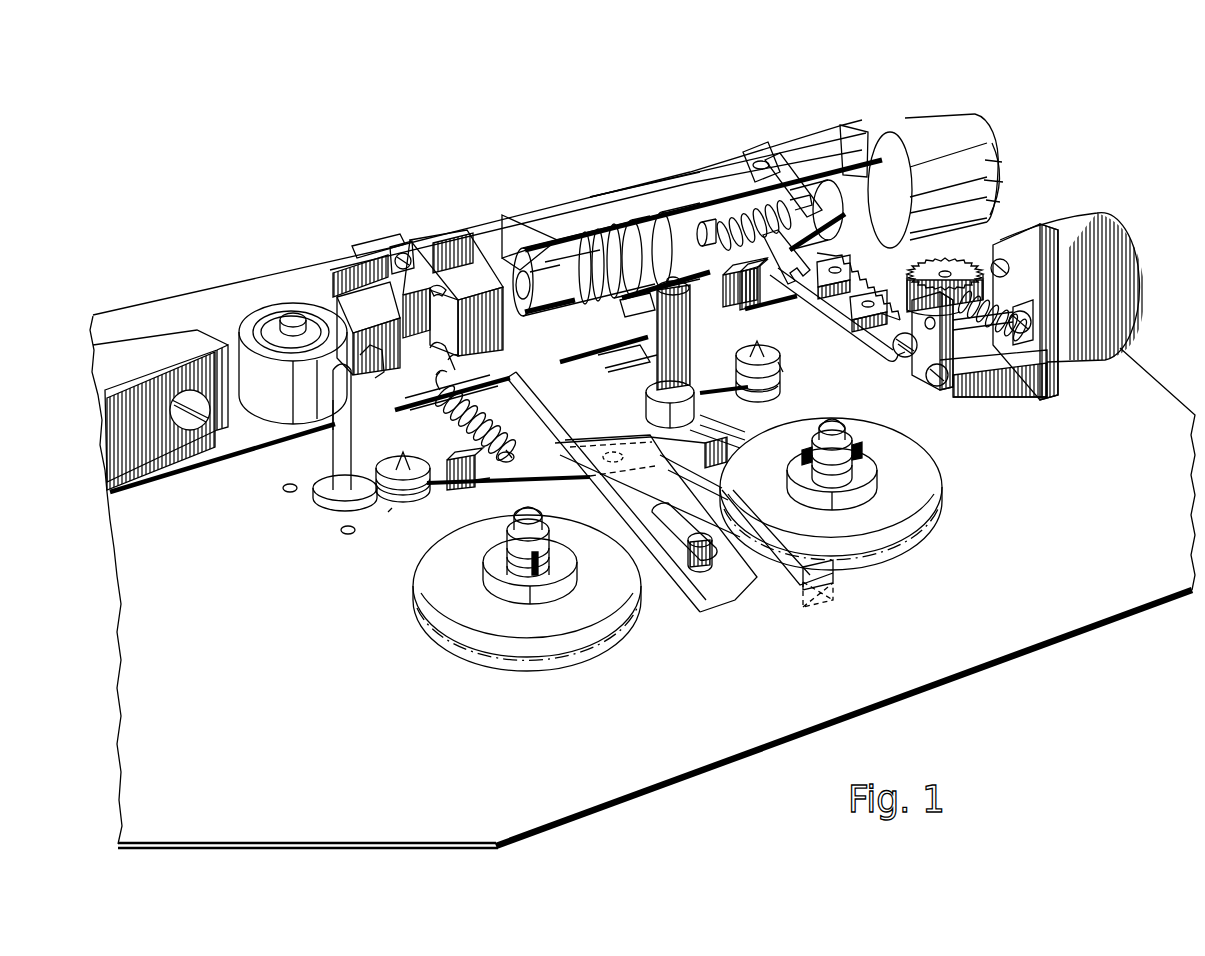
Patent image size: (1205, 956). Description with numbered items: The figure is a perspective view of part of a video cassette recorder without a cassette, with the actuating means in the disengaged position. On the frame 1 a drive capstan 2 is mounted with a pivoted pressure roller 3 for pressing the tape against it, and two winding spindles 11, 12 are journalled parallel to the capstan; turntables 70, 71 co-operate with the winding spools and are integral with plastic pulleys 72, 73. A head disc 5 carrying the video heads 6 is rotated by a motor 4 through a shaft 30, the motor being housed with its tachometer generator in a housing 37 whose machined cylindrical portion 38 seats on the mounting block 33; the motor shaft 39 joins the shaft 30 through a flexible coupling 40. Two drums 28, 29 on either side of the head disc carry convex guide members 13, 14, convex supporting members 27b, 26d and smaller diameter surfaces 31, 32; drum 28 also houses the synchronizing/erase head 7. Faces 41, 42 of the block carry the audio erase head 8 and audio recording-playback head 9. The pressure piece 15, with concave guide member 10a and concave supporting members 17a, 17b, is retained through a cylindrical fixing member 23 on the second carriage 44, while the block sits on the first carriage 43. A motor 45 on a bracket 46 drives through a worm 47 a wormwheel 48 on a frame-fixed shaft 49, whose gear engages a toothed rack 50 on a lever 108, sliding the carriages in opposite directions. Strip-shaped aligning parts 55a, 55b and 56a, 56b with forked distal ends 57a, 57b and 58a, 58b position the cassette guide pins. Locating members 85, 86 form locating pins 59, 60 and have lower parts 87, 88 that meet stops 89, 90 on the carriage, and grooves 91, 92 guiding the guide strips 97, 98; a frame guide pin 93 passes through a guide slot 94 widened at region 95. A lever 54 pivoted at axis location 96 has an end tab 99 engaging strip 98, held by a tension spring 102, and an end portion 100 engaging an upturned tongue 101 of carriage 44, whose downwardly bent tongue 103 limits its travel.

The frame 1 is at (953, 656).
The drive capstan 2 is at (333, 462).
The pressure roller 3 is at (272, 312).
The motor 4 is at (1003, 149).
The head disc 5 is at (592, 232).
The video recording and/or playback heads 6 is at (620, 298).
The synchronizing/erase head 7 is at (627, 232).
The audio erase head 8 is at (466, 282).
The audio recording-playback head 9 is at (340, 275).
The concavely curved guide member 10a is at (657, 380).
The winding spindle 11 is at (504, 547).
The winding spindle 12 is at (858, 470).
The convexly curved guide member 13 is at (678, 227).
The convexly curved guide member 14 is at (542, 262).
The pressure piece 15 is at (652, 387).
The concave supporting member 17a is at (642, 352).
The concave supporting member 17b is at (652, 300).
The cylindrical fixing member 23 is at (686, 412).
The convex supporting member 26d is at (626, 234).
The convex supporting member 27b is at (579, 242).
The drum 28 is at (683, 228).
The drum 29 is at (567, 292).
The rotatable shaft 30 is at (700, 220).
The smaller diameter surface 31 is at (667, 228).
The smaller diameter surface 32 is at (523, 232).
The mounting block 33 is at (601, 203).
The housing 37 is at (938, 135).
The cylindrical portion 38 is at (858, 180).
The motor shaft 39 is at (853, 237).
The flexible coupling 40 is at (742, 218).
The face 41 is at (462, 242).
The face 42 is at (360, 290).
The first carriage 43 is at (548, 392).
The second carriage 44 is at (728, 430).
The motor 45 is at (1068, 250).
The bracket 46 is at (1012, 348).
The worm 47 is at (1052, 342).
The wormwheel 48 is at (912, 263).
The shaft 49 is at (945, 272).
The toothed rack 50 is at (858, 330).
The lever 54 is at (552, 468).
The strip-shaped part 55a is at (757, 158).
The strip-shaped part 55b is at (772, 302).
The strip-shaped part 56a is at (402, 250).
The strip-shaped part 56b is at (394, 372).
The distal end 57a is at (798, 195).
The distal end 57b is at (805, 275).
The distal end 58a is at (436, 282).
The distal end 58b is at (462, 358).
The locating pin 59 is at (767, 340).
The locating pin 60 is at (346, 500).
The turntable 70 is at (855, 488).
The turntable 71 is at (502, 584).
The pulley 72 is at (930, 502).
The pulley 73 is at (492, 640).
The locating member 85 is at (787, 370).
The locating member 86 is at (391, 515).
The lower part 87 is at (783, 378).
The lower part 88 is at (401, 497).
The locating stop 89 is at (702, 322).
The locating stop 90 is at (368, 422).
The groove 91 is at (760, 398).
The groove 92 is at (432, 480).
The guide pin 93 is at (742, 600).
The guide slot 94 is at (666, 550).
The widened region 95 is at (628, 506).
The axis location 96 is at (614, 444).
The guide strip 97 is at (752, 438).
The guide strip 98 is at (460, 488).
The end tab 99 is at (476, 483).
The end portion 100 is at (716, 479).
The tongue 101 is at (718, 458).
The tension spring 102 is at (508, 384).
The downwardly bent tongue 103 is at (840, 600).
The lever 108 is at (896, 360).